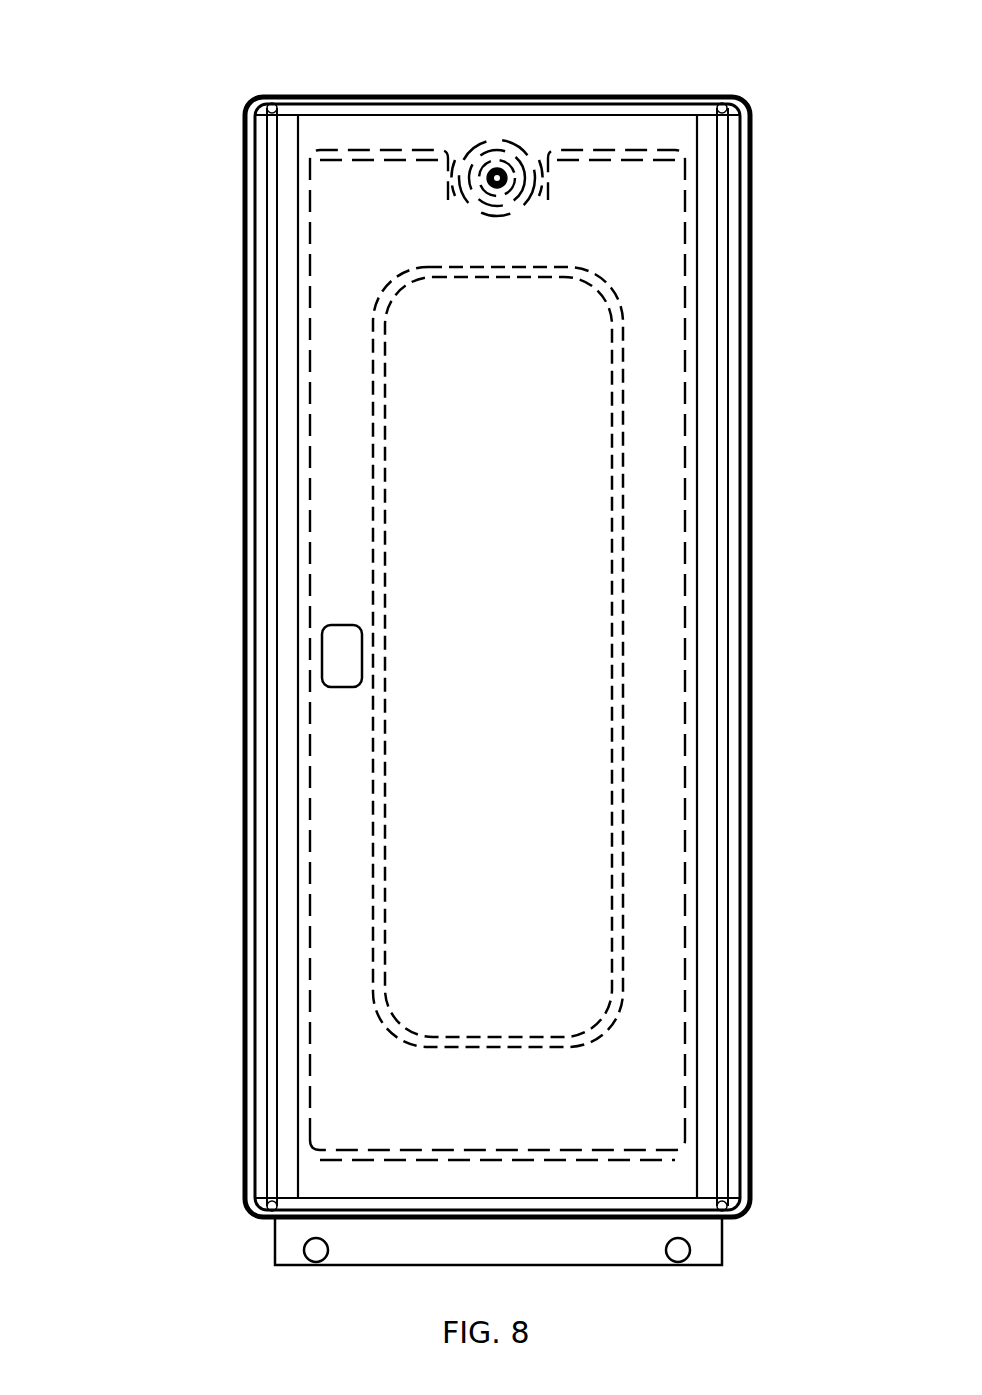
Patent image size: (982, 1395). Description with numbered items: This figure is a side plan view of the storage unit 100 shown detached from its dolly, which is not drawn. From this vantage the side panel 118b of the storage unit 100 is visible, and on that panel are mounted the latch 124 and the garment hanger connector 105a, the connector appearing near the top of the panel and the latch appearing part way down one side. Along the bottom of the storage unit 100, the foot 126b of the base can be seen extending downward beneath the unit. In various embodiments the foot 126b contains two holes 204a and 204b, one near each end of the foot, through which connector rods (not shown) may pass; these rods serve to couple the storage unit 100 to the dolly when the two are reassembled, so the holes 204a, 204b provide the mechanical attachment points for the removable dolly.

The storage unit 100 is at (132, 149).
The garment hanger connector 105a is at (485, 174).
The side panel 118b is at (498, 657).
The latch 124 is at (328, 648).
The foot 126b is at (498, 1241).
The hole 204a is at (690, 1248).
The hole 204b is at (307, 1245).